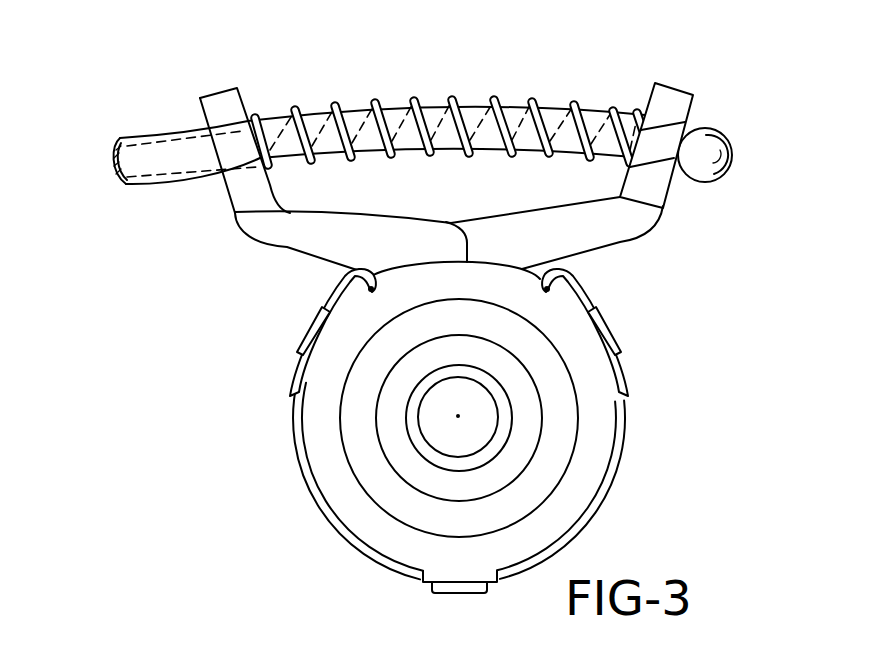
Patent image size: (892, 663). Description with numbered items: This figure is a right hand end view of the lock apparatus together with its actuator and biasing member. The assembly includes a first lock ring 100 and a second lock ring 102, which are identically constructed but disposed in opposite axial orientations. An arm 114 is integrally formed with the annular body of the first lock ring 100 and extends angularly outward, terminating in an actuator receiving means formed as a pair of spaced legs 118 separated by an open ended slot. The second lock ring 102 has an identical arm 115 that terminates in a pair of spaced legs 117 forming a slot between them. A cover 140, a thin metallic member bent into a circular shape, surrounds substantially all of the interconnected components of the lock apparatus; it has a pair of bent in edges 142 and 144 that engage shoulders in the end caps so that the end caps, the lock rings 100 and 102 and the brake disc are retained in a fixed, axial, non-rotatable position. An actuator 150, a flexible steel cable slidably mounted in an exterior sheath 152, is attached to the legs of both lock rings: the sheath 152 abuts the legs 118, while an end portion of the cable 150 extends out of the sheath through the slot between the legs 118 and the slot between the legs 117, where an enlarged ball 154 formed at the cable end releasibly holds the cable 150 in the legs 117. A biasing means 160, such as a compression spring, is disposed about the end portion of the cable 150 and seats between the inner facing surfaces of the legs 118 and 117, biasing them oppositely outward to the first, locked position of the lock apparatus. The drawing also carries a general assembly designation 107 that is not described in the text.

The first lock ring 100 is at (226, 259).
The second lock ring 102 is at (662, 236).
The strap assembly 107 is at (606, 36).
The arm 114 is at (285, 237).
The arm 115 is at (567, 240).
The spaced legs 117 is at (668, 106).
The spaced legs 118 is at (212, 121).
The cover 140 is at (292, 461).
The bent in edge 142 is at (300, 358).
The bent in edge 144 is at (600, 308).
The actuator 150 is at (471, 103).
The sheath 152 is at (143, 188).
The enlarged ball 154 is at (708, 144).
The biasing means 160 is at (345, 101).